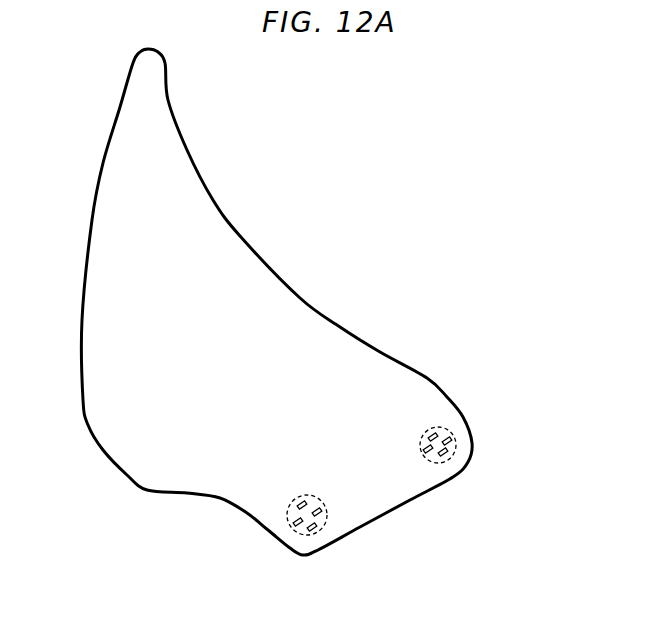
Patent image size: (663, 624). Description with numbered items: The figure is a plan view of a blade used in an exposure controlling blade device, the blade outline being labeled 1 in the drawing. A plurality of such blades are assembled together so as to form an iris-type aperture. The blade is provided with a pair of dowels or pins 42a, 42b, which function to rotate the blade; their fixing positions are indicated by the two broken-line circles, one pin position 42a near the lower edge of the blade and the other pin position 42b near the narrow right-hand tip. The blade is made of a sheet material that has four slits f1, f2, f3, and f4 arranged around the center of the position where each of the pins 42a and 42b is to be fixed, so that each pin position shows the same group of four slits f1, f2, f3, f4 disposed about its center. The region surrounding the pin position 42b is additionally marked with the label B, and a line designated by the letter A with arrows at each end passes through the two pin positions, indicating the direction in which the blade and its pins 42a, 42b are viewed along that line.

The workpiece / plate member 1 is at (266, 283).
The pin 42a is at (320, 528).
The pin 42b is at (455, 452).
The slit f1 is at (306, 532).
The slit f2 is at (292, 512).
The slit f3 is at (305, 500).
The slit f4 is at (328, 512).
The detail region B is at (428, 456).
The section line A- A is at (265, 540).